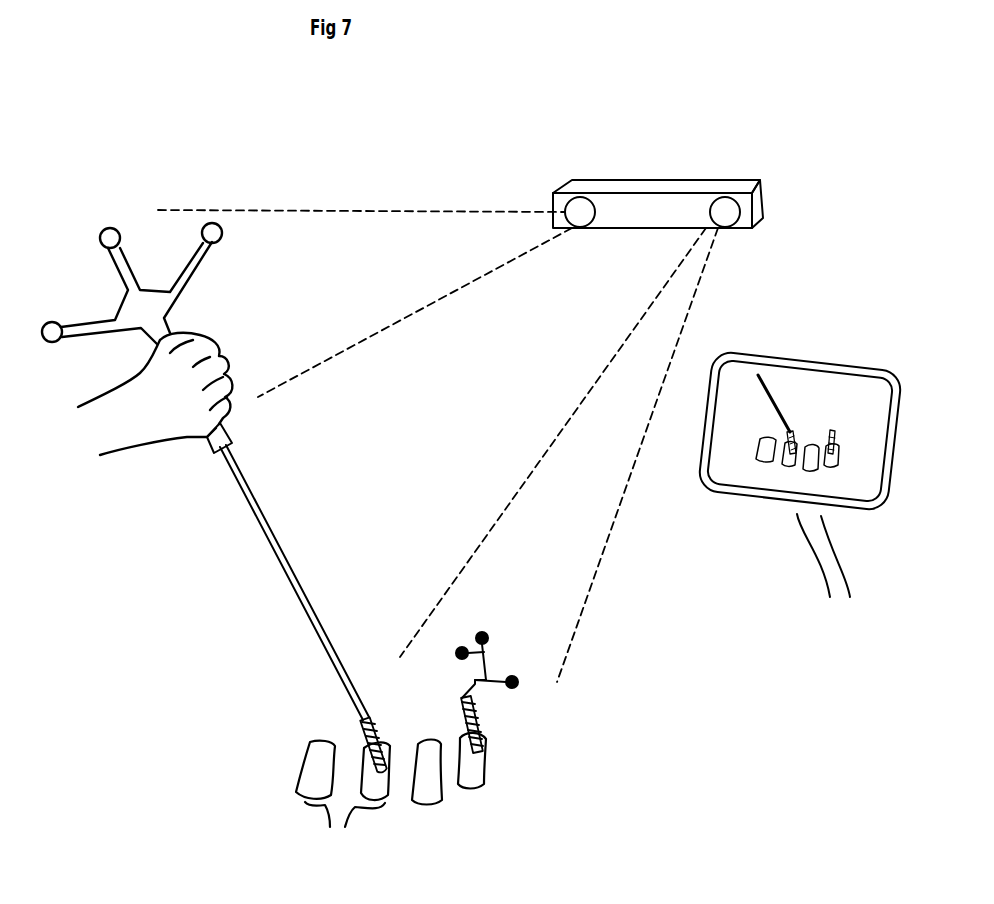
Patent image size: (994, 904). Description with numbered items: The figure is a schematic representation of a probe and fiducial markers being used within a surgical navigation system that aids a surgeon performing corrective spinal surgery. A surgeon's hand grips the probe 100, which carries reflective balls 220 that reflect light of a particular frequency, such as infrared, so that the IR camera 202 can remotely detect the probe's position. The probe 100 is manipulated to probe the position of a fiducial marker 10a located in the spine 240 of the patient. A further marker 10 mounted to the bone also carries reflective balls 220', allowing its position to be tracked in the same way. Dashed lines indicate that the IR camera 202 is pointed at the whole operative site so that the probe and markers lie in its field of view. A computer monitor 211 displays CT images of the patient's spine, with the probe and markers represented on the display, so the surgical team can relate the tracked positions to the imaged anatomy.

The reflective balls 220 is at (132, 248).
The IR camera 202 is at (642, 183).
The computer monitor 211 is at (813, 358).
The probe 100 is at (257, 522).
The fiducial marker 10a is at (362, 722).
The spine 240 is at (391, 792).
The reflective balls 220' is at (511, 665).
The marker 10 is at (477, 735).